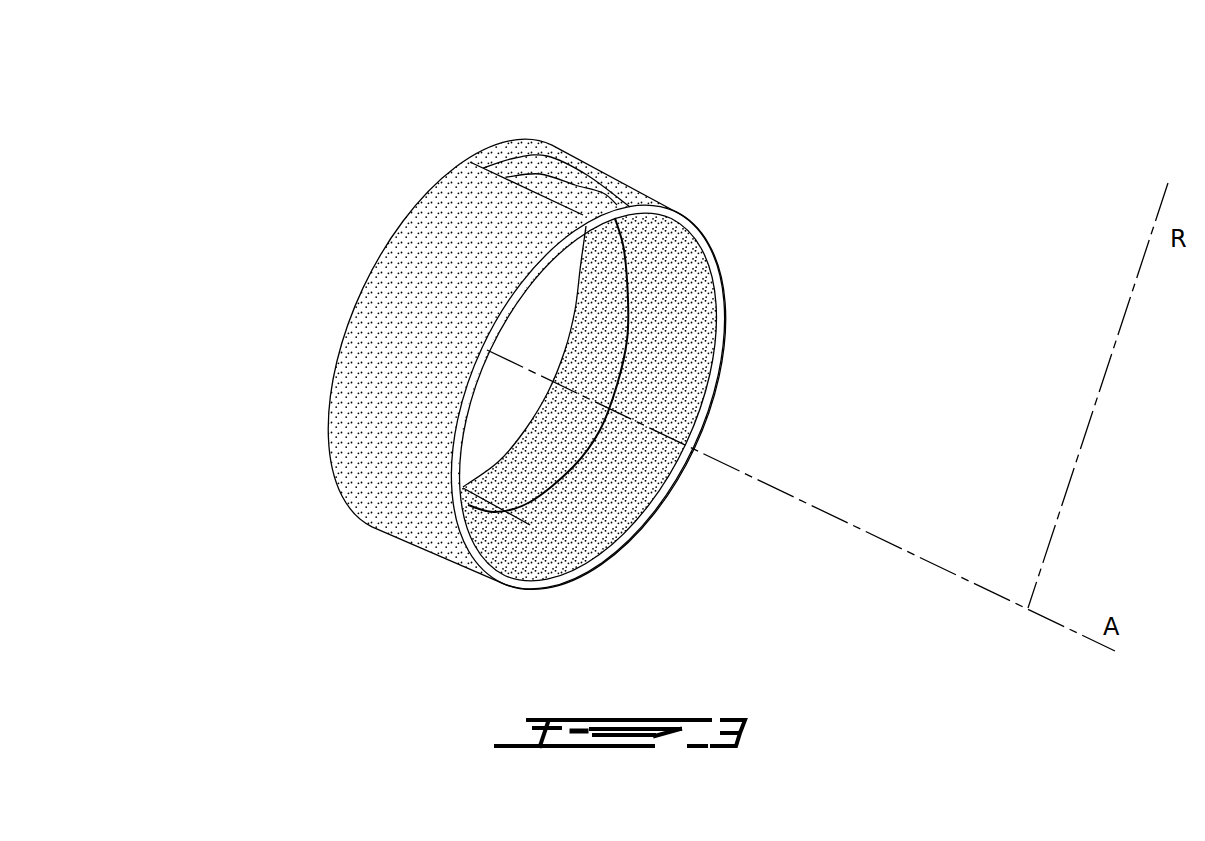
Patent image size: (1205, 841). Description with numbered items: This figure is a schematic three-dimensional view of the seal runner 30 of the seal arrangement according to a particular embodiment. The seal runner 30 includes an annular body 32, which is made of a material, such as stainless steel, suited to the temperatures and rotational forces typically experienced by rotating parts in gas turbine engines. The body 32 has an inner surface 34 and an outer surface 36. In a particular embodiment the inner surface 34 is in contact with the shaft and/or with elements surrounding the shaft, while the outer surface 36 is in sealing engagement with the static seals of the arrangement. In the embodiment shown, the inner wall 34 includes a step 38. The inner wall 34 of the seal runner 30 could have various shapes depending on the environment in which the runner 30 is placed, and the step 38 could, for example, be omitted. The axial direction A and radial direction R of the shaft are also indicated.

The seal runner 30 is at (399, 338).
The annular body 32 is at (480, 168).
The inner surface 34 is at (610, 462).
The outer surface 36 is at (627, 183).
The step 38 is at (500, 488).